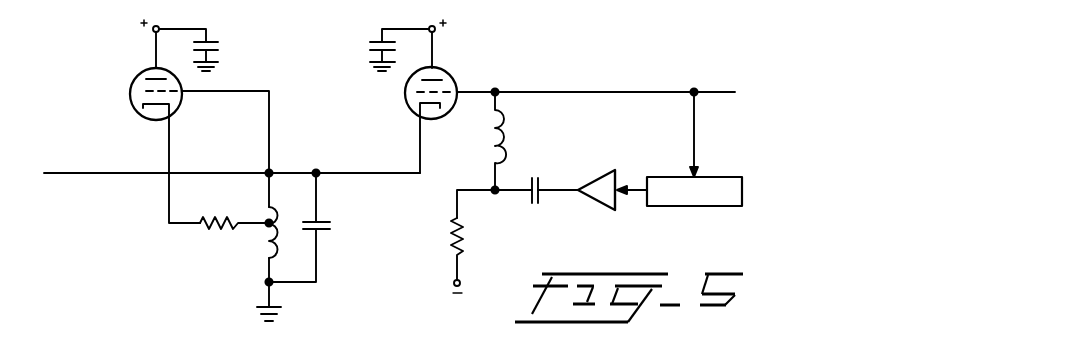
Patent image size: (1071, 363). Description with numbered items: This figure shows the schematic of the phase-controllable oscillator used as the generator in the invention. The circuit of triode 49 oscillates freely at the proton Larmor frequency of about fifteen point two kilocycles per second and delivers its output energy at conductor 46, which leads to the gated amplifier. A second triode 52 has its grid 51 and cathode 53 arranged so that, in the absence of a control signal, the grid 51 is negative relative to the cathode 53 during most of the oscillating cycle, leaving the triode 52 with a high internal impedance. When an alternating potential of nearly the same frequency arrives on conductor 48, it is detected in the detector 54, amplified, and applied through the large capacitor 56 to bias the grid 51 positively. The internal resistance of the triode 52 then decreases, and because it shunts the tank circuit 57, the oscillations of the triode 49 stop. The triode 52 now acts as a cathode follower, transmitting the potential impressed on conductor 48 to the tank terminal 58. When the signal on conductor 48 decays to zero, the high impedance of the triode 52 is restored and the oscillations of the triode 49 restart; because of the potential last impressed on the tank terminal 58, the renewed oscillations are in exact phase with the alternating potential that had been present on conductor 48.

The conductor 46 is at (95, 172).
The conductor 48 is at (725, 92).
The triode 49 is at (140, 73).
The grid 51 is at (420, 91).
The triode 52 is at (448, 76).
The cathode 53 is at (445, 115).
The detector 54 is at (712, 176).
The capacitor 56 is at (546, 180).
The tank circuit 57 is at (300, 204).
The tank terminal 58 is at (270, 172).